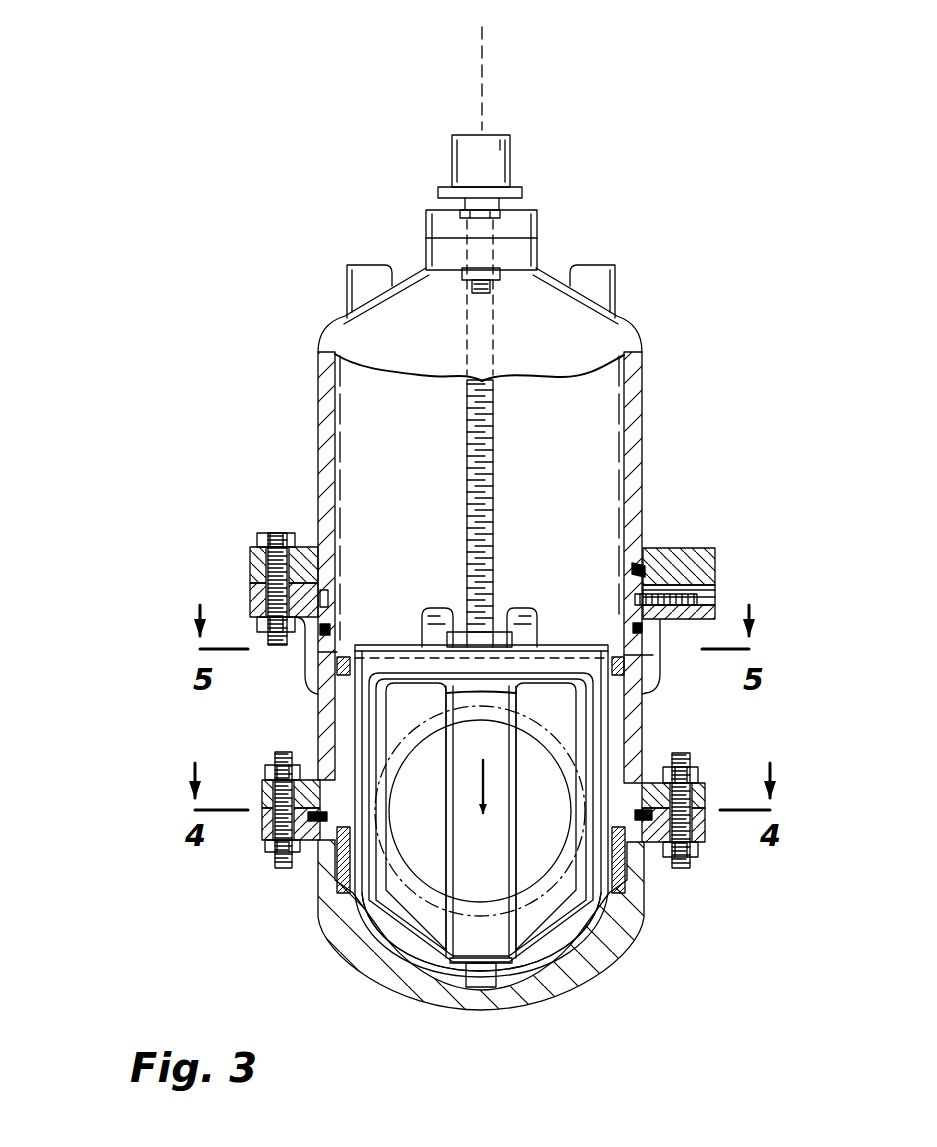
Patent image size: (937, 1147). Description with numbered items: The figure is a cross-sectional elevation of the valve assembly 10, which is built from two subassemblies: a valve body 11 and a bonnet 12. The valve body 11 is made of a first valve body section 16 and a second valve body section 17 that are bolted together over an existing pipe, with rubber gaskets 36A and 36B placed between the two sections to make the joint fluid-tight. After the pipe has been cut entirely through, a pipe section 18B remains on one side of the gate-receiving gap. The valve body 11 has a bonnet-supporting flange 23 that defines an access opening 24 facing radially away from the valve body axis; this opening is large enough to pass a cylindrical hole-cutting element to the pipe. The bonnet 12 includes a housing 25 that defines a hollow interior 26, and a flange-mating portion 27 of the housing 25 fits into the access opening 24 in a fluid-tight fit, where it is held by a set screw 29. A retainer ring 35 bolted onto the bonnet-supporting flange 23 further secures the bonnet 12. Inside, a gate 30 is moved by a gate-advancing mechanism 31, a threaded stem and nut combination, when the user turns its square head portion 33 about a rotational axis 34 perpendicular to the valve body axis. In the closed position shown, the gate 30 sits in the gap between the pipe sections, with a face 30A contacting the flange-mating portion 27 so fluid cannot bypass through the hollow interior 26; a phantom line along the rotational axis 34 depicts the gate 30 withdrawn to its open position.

The valve assembly 10 is at (100, 114).
The valve body 11 is at (244, 586).
The bonnet 12 is at (422, 205).
The first valve body section 16 is at (262, 782).
The second valve body section 17 is at (265, 848).
The pipe section 18B is at (400, 905).
The bonnet-supporting flange 23 is at (718, 584).
The access opening 24 is at (636, 560).
The housing 25 is at (634, 331).
The hollow interior 26 is at (568, 448).
The flange-mating portion 27 is at (631, 648).
The set screw 29 is at (716, 600).
The gate 30 is at (358, 719).
The face of the gate 30A is at (592, 918).
The gate-advancing mechanism 31 is at (494, 512).
The square head portion 33 is at (501, 134).
The rotational axis 34 is at (484, 46).
The retainer ring 35 is at (707, 550).
The rubber gasket 36A is at (320, 822).
The rubber gasket 36B is at (645, 820).